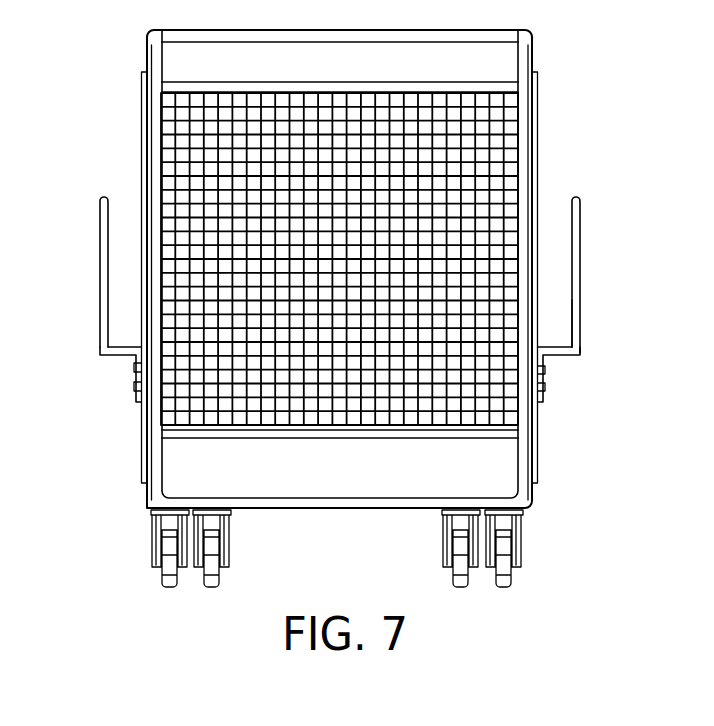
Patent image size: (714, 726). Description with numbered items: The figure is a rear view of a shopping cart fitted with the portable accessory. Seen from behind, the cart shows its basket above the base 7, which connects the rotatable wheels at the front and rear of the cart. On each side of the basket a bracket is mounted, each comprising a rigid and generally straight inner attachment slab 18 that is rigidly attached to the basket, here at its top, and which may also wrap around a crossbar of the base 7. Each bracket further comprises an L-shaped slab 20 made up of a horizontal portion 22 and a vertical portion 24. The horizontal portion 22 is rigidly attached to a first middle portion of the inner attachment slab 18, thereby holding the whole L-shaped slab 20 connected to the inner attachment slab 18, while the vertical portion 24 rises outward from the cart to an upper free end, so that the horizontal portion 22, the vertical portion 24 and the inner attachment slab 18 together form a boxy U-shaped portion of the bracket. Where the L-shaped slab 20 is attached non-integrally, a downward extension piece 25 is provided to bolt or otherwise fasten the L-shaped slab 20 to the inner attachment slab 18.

The base 7 is at (310, 503).
The inner attachment slab 18 is at (538, 118).
The L-shaped slab 20 is at (576, 300).
The horizontal portion 22 is at (560, 356).
The vertical portion 24 is at (580, 238).
The downward extension piece 25 is at (539, 400).